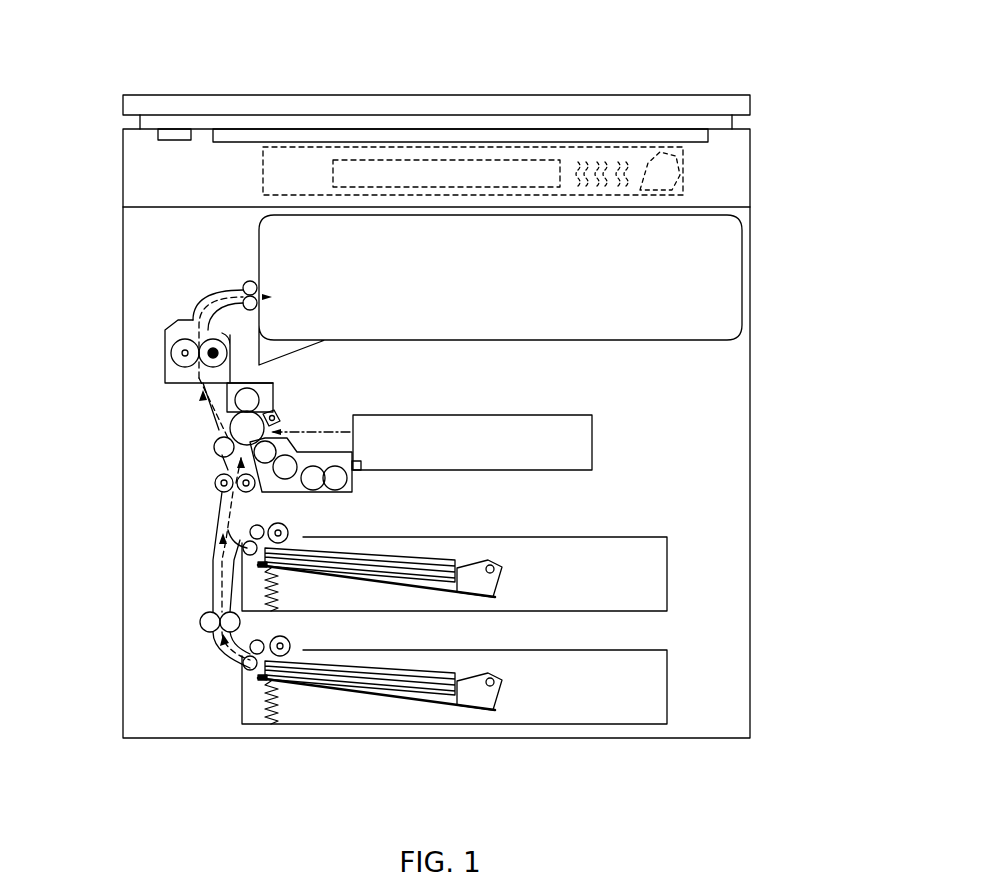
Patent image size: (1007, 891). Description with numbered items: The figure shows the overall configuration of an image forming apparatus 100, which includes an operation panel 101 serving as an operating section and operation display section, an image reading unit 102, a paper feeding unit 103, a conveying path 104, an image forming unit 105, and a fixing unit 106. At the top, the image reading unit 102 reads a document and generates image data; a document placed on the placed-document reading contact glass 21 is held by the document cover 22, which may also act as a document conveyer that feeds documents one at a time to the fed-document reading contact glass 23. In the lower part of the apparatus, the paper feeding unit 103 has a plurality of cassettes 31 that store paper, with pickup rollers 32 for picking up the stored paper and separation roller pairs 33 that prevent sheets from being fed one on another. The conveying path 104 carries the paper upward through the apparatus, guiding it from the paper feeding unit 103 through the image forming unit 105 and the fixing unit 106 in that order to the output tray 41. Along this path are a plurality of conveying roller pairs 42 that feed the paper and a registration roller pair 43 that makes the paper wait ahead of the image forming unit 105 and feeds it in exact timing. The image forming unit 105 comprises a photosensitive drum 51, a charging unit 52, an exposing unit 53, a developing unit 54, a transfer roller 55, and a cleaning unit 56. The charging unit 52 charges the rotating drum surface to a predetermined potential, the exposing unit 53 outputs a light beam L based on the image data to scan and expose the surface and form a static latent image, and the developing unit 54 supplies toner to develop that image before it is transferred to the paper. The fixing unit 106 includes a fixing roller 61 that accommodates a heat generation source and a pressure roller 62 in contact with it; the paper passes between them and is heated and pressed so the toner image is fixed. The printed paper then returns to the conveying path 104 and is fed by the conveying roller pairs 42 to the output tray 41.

The image forming apparatus 100 is at (128, 72).
The operation panel 101 is at (252, 178).
The image reading unit 102 is at (758, 203).
The paper feeding unit 103 is at (676, 567).
The conveying path 104 is at (210, 528).
The image forming unit 105 is at (331, 414).
The fixing unit 106 is at (152, 389).
The placed-document reading contact glass 21 is at (373, 135).
The document cover 22 is at (277, 100).
The fed-document reading contact glass 23 is at (174, 133).
The cassettes 31 is at (572, 536).
The pickup rollers 32 is at (287, 528).
The separation roller pairs 33 is at (253, 540).
The output tray 41 is at (530, 340).
The conveying roller pairs 42 is at (246, 283).
The registration roller pair 43 is at (213, 483).
The photosensitive drum 51 is at (232, 424).
The charging unit 52 is at (281, 420).
The exposing unit 53 is at (461, 418).
The developing unit 54 is at (353, 487).
The transfer roller 55 is at (212, 446).
The cleaning unit 56 is at (273, 388).
The fixing roller 61 is at (228, 349).
The pressure roller 62 is at (171, 353).
The light beam L is at (344, 430).